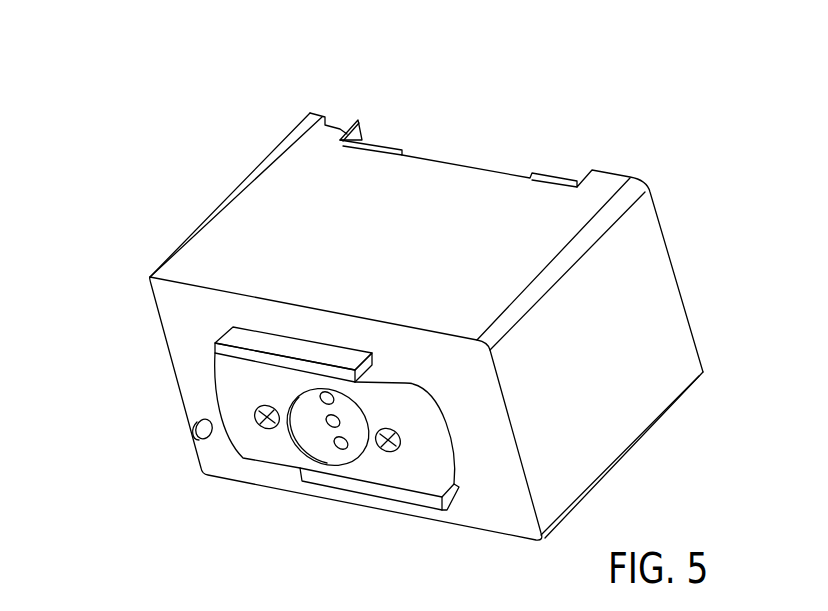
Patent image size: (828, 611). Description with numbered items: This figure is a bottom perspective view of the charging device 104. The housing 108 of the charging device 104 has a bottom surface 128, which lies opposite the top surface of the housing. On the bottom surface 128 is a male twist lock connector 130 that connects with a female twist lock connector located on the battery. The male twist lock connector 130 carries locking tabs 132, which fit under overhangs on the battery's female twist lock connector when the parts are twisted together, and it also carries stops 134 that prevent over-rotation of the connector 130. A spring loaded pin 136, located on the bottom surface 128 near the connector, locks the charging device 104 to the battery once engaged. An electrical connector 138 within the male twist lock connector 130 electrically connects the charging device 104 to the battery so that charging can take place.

The charging device 104 is at (246, 117).
The housing 108 is at (232, 213).
The bottom surface 128 is at (175, 322).
The male twist lock connector 130 is at (277, 453).
The locking tabs 132 is at (397, 408).
The stops 134 is at (273, 345).
The spring loaded pin 136 is at (193, 433).
The electrical connector 138 is at (330, 423).